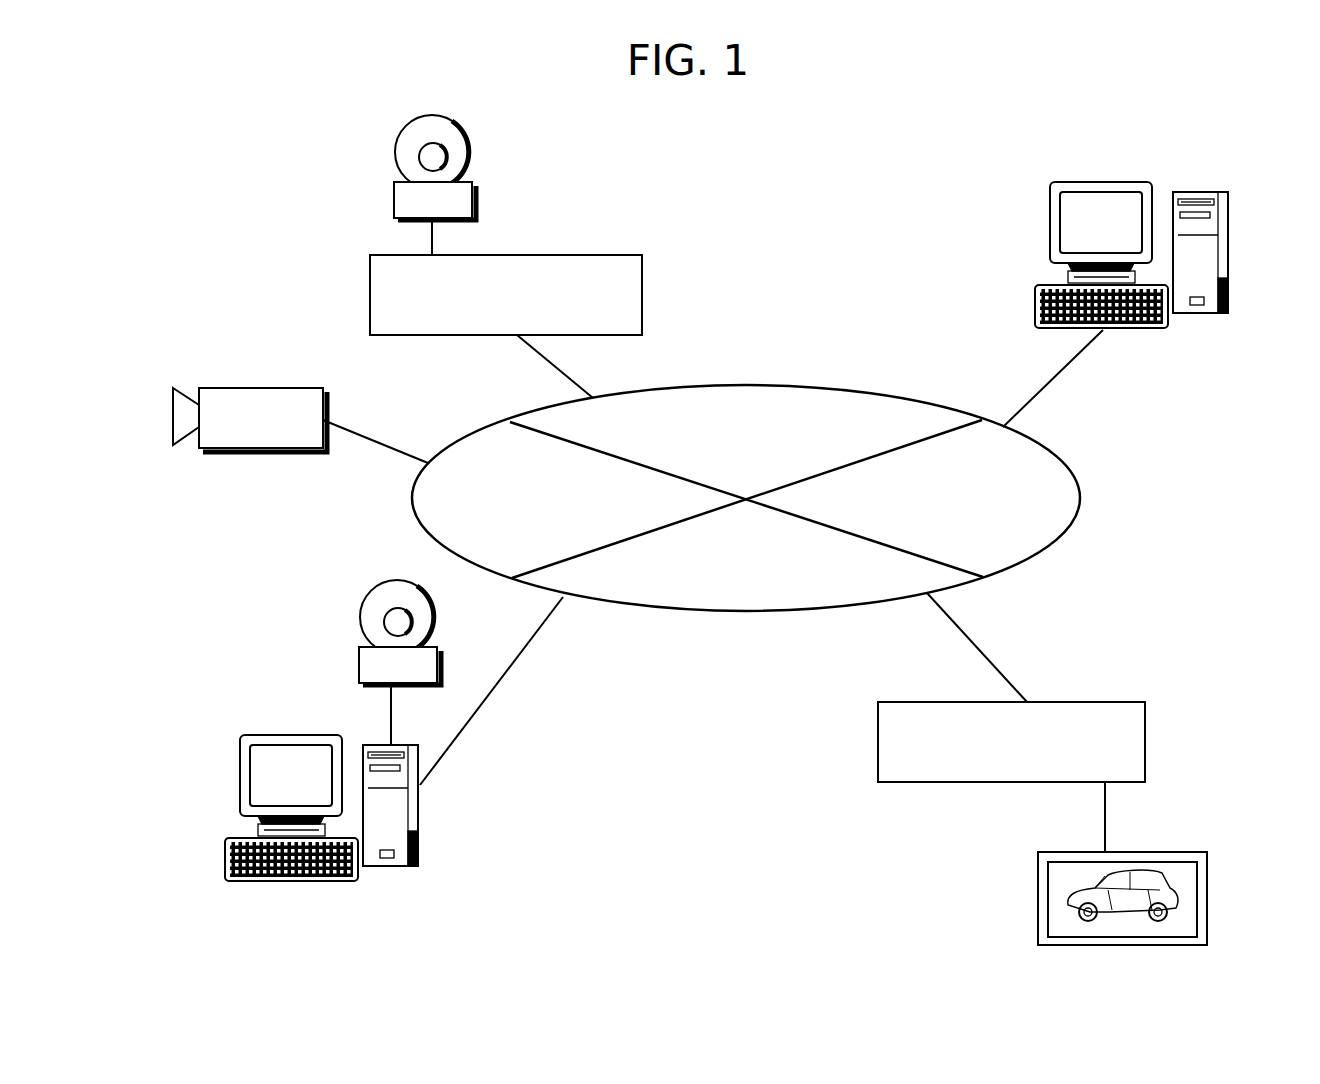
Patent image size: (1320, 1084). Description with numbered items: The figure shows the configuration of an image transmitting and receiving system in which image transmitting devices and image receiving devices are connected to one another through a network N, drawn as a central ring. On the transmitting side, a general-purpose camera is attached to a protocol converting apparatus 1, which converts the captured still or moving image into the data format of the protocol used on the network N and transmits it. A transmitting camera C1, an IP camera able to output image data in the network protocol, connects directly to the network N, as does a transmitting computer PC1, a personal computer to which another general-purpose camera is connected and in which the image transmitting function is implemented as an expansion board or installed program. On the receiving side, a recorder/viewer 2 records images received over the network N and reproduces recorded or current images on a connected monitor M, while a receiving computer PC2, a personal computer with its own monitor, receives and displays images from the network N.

The protocol converting apparatus 1 is at (591, 255).
The recorder/viewer 2 is at (1089, 702).
The transmitting camera C1 is at (260, 388).
The transmitting computer PC1 is at (391, 871).
The receiving computer PC2 is at (1199, 192).
The monitor M is at (1038, 903).
The network N is at (678, 610).